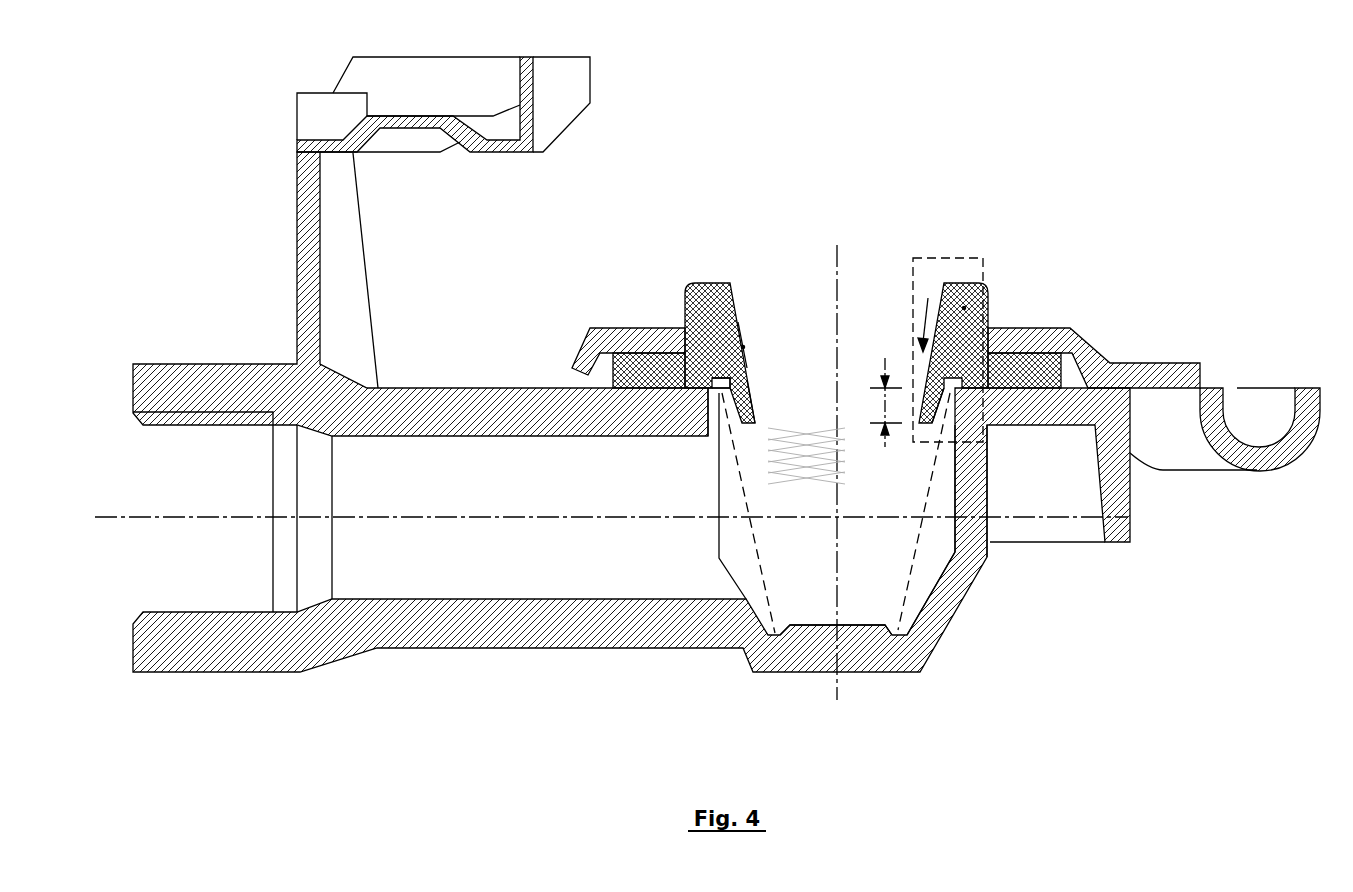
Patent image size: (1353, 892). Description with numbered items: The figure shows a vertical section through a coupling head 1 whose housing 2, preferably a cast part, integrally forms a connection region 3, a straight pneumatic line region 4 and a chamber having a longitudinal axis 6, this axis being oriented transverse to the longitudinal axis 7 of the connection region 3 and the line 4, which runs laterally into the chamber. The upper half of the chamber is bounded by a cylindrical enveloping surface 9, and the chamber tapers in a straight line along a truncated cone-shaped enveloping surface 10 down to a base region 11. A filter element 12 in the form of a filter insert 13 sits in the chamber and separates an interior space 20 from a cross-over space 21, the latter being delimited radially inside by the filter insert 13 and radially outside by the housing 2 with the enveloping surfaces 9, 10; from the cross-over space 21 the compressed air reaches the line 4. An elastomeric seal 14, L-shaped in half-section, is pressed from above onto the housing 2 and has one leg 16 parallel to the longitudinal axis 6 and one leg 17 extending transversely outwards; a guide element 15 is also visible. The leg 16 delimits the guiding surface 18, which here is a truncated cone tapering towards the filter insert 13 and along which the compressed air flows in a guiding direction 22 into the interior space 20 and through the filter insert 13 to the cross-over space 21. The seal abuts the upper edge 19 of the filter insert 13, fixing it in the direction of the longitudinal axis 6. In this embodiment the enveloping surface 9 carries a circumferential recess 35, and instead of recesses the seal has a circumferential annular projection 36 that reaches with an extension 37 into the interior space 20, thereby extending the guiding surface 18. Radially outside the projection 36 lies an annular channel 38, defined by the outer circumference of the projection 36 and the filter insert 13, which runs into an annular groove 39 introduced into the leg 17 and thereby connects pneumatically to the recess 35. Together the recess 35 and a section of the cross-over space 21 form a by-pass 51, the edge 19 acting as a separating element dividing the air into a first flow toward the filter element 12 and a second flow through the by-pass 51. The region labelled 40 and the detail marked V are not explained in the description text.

The coupling head 1 is at (833, 187).
The housing 2 is at (586, 642).
The connection region 3 is at (208, 581).
The pneumatic line region 4 is at (485, 581).
The longitudinal axis 6 is at (837, 695).
The longitudinal axis 7 is at (128, 517).
The cylindrical enveloping surface 9 is at (955, 500).
The truncated cone-shaped enveloping surface 10 is at (933, 593).
The base region 11 is at (863, 617).
The filter element 12 is at (757, 548).
The filter insert 13 is at (757, 548).
The seal 14 is at (964, 308).
The guide element 15 is at (1267, 458).
The leg 16 is at (712, 300).
The leg 17 is at (637, 368).
The guiding surface 18 is at (745, 347).
The upper edge 19 is at (950, 392).
The interior space 20 is at (818, 593).
The cross-over space 21 is at (728, 543).
The guiding direction 22 is at (926, 314).
The recess 35 is at (987, 425).
The annular projection 36 is at (750, 410).
The extension 37 is at (882, 405).
The annular channel 38 is at (731, 396).
The annular groove 39 is at (712, 380).
The opening 40 is at (766, 316).
The by-pass 51 is at (710, 418).
The detail region V is at (983, 273).